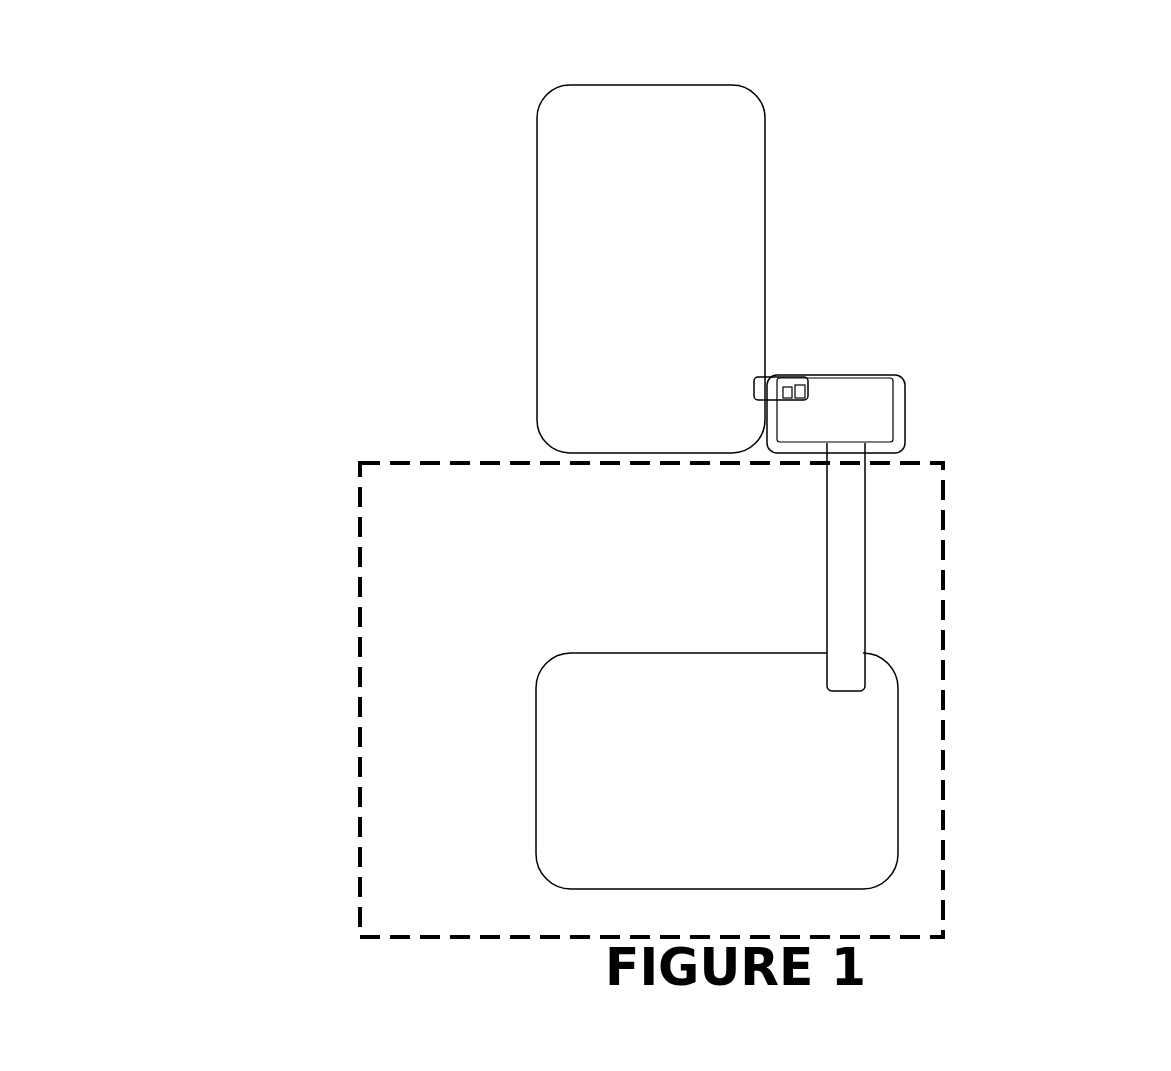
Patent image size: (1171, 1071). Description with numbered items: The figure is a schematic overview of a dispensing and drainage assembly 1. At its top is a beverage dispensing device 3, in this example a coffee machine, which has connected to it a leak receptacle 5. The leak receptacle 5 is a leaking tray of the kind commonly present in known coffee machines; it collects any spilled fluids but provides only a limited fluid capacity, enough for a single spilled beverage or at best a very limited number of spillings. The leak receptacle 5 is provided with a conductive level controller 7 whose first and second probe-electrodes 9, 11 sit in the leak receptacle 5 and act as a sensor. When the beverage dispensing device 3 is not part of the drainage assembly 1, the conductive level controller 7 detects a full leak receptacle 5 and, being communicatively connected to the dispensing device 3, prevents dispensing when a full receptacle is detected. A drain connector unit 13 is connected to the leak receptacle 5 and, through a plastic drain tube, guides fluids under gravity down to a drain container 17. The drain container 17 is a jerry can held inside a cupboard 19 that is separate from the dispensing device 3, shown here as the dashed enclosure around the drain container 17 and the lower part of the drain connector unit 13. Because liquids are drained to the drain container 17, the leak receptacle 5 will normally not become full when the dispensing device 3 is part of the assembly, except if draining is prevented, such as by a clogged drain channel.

The dispensing and drainage assembly 1 is at (360, 203).
The beverage dispensing device 3 is at (767, 182).
The leak receptacle 5 is at (898, 373).
The conductive level controller 7 is at (778, 377).
The first probe-electrode 9 is at (790, 386).
The second probe-electrode 11 is at (800, 385).
The drain connector unit 13 is at (867, 618).
The drain container 17 is at (898, 748).
The cupboard 19 is at (945, 522).